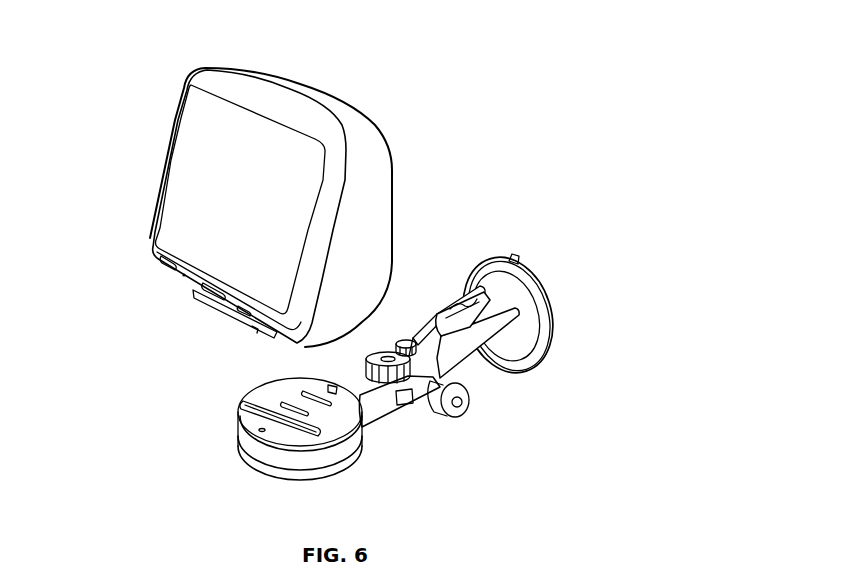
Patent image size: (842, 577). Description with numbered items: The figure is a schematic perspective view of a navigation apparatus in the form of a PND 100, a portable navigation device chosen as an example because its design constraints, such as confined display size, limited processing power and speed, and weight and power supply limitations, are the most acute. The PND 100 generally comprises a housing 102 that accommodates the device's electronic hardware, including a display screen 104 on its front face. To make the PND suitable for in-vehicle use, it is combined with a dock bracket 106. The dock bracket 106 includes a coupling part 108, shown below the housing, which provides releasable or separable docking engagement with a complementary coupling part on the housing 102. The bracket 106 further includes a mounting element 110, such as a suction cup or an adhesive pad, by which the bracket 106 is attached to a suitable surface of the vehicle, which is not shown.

The PND 100 is at (145, 320).
The housing 102 is at (373, 182).
The display screen 104 is at (188, 210).
The dock bracket 106 is at (368, 395).
The coupling part 108 is at (237, 434).
The mounting element 110 is at (533, 362).